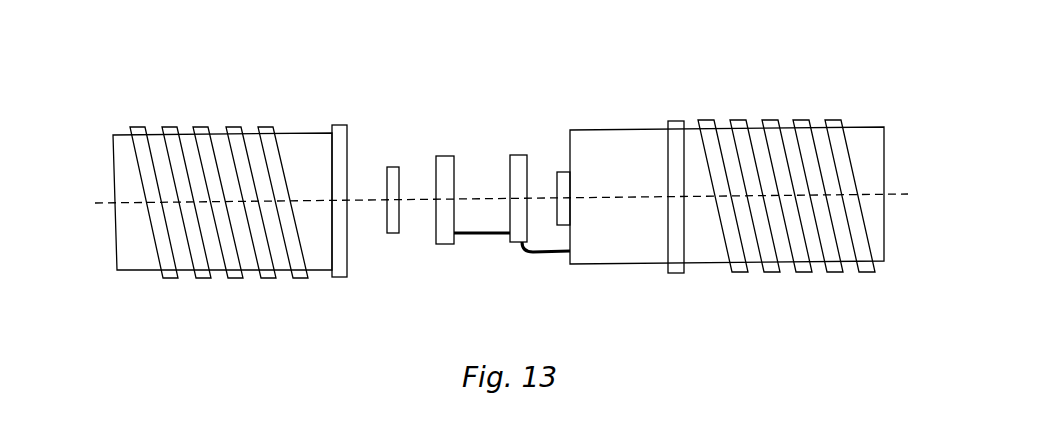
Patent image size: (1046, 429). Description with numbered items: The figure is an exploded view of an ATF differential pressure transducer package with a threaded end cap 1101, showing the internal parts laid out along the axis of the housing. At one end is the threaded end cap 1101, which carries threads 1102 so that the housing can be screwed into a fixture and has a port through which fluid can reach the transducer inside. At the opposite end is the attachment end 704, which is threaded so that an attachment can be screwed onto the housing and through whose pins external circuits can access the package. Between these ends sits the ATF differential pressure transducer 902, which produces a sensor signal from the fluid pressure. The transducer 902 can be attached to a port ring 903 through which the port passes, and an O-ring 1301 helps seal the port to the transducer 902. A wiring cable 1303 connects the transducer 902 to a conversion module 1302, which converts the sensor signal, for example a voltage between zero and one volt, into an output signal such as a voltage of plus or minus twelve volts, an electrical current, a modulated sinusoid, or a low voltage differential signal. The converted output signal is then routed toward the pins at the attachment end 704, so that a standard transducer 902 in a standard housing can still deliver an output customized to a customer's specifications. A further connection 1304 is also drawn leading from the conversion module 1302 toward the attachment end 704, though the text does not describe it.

The attachment end 704 is at (872, 142).
The ATF differential pressure transducer 902 is at (441, 193).
The port ring 903 is at (562, 190).
The threaded end cap 1101 is at (127, 255).
The threads 1102 is at (230, 267).
The O-ring 1301 is at (393, 180).
The conversion module 1302 is at (520, 180).
The wiring cable 1303 is at (487, 233).
The second connecting rod 1304 is at (550, 252).